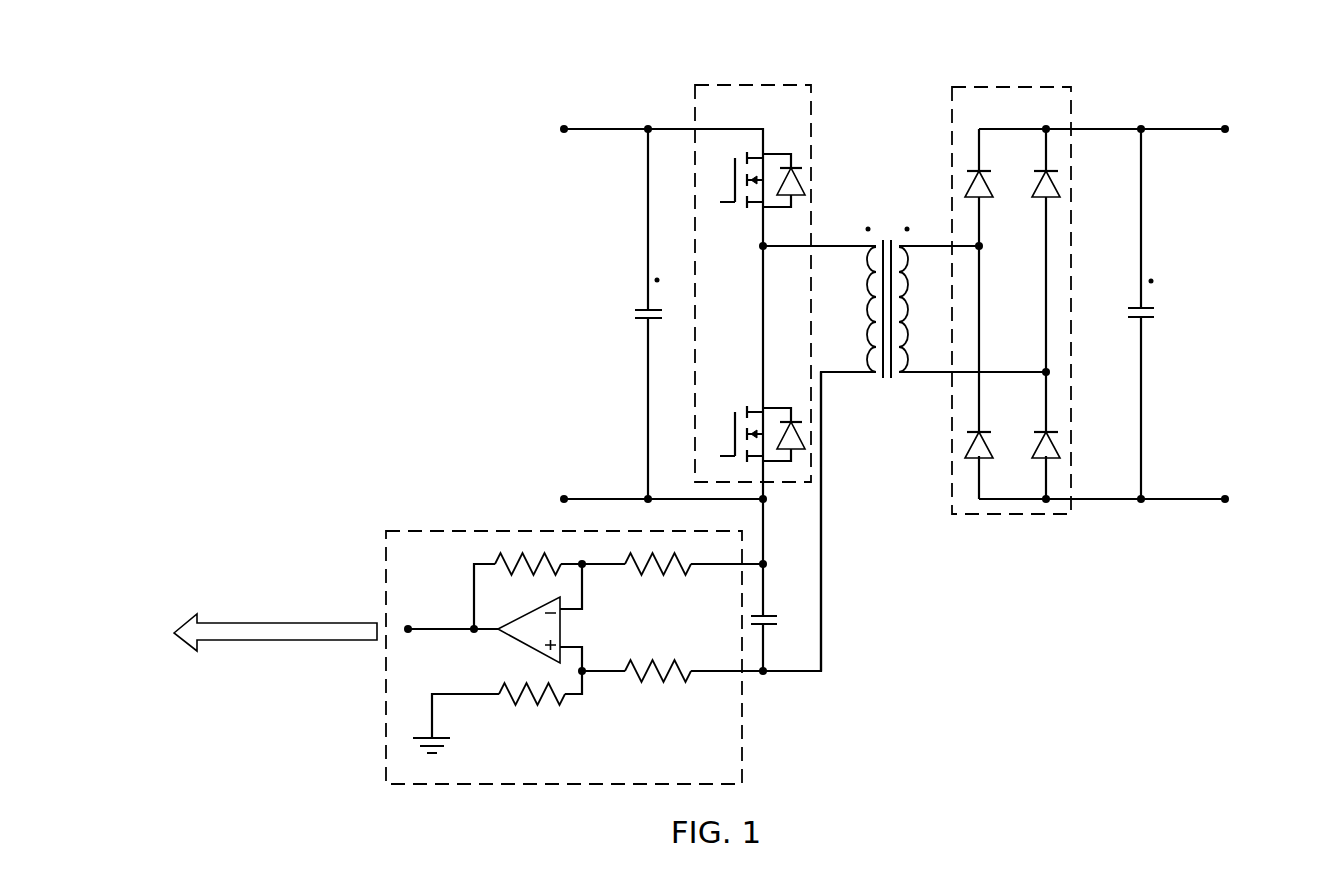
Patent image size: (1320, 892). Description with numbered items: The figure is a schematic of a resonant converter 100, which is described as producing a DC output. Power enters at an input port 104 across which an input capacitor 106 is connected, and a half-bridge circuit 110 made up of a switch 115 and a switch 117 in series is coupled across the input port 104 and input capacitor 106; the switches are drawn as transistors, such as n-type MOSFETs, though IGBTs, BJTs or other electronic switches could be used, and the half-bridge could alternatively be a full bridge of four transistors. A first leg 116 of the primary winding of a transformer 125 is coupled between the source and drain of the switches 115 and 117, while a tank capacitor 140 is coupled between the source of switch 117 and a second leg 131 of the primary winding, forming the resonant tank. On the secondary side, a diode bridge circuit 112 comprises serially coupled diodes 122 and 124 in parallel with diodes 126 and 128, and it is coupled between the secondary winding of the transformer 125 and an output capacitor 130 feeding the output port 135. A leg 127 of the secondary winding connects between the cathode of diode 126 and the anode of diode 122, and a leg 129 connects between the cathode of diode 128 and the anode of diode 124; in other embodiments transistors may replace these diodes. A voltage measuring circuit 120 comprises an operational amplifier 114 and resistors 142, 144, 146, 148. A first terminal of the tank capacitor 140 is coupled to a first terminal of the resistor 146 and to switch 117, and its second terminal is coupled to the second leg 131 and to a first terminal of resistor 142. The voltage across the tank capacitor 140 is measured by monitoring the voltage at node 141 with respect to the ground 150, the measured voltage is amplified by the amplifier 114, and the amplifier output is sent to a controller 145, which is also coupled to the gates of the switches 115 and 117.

The resonant converter 100 is at (1224, 70).
The input port 104 is at (512, 325).
The input capacitor 106 is at (640, 306).
The half-bridge circuit 110 is at (750, 82).
The diode bridge circuit 112 is at (1010, 85).
The operational amplifier 114 is at (561, 640).
The switch 115 is at (782, 150).
The first leg of primary winding 116 is at (833, 243).
The switch 117 is at (782, 405).
The voltage measuring circuit 120 is at (745, 746).
The diode 122 is at (975, 170).
The diode 124 is at (1050, 170).
The transformer 125 is at (883, 240).
The diode 126 is at (972, 455).
The leg of secondary winding 127 is at (927, 243).
The diode 128 is at (1050, 432).
The leg of secondary winding 129 is at (907, 376).
The output capacitor 130 is at (1152, 306).
The second leg of primary winding 131 is at (822, 444).
The output port 135 is at (1195, 194).
The tank capacitor 140 is at (772, 615).
The node 141 is at (768, 562).
The resistor 142 is at (663, 690).
The resistor 144 is at (556, 705).
The controller 145 is at (287, 642).
The resistor 146 is at (663, 580).
The resistor 148 is at (525, 550).
The ground 150 is at (450, 742).